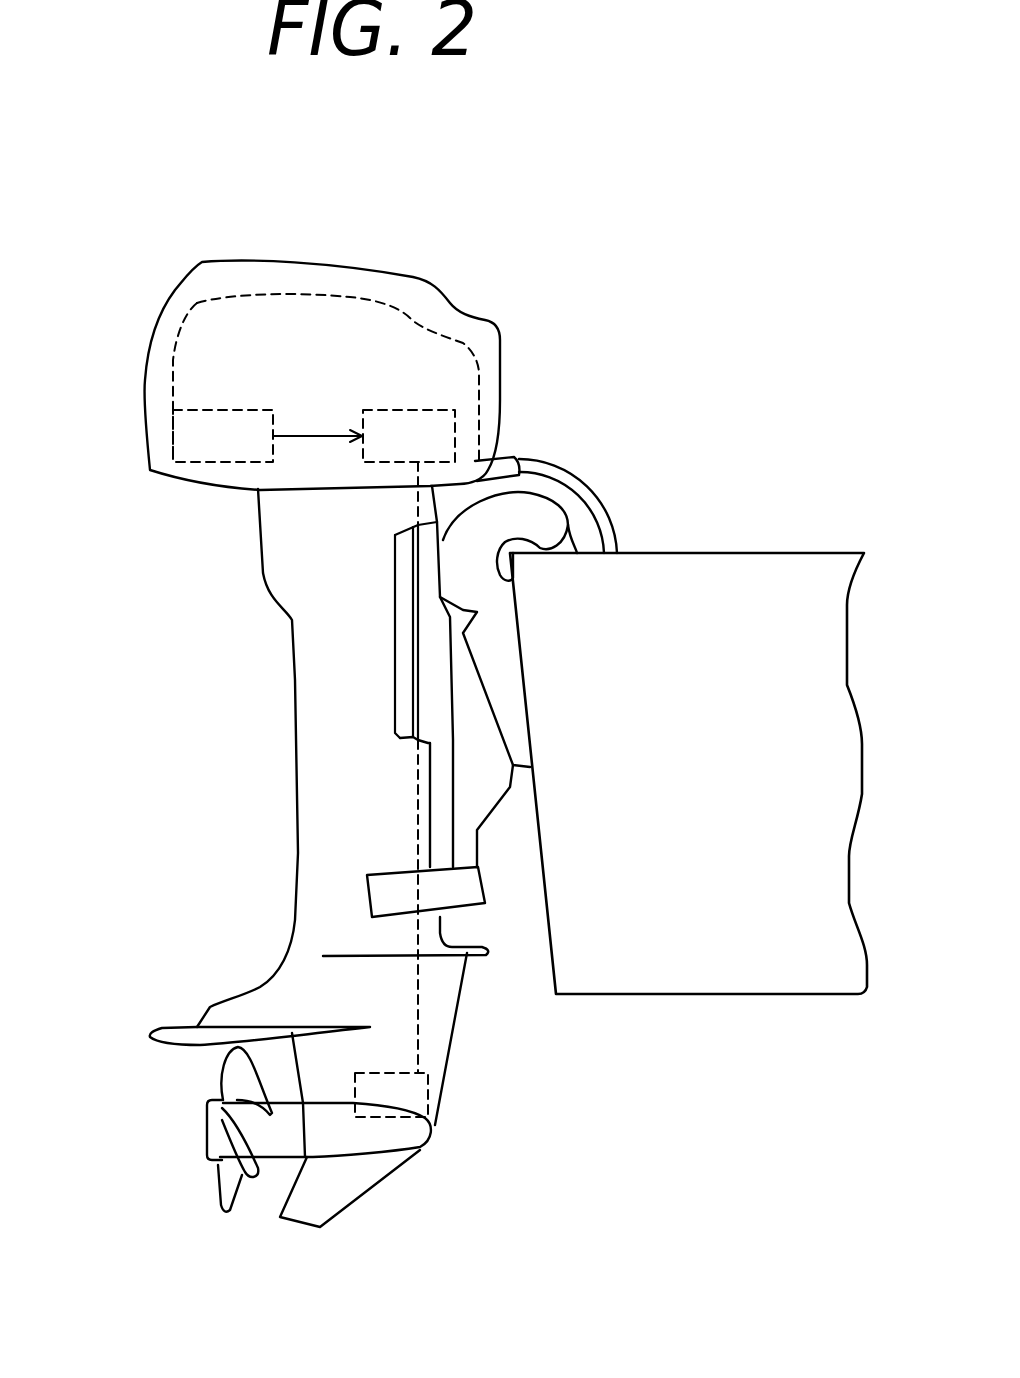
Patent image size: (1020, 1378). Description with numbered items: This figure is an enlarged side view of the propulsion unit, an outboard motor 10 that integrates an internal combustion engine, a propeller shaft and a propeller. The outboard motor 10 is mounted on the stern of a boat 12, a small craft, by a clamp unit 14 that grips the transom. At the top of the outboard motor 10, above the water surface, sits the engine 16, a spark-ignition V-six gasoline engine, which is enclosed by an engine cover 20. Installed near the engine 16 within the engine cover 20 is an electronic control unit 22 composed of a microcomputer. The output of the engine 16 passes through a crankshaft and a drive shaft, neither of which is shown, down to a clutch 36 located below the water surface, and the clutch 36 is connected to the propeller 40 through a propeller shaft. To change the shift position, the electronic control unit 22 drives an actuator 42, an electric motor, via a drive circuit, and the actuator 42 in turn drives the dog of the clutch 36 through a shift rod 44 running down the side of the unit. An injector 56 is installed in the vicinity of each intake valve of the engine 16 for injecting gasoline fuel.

The outboard motor 10 is at (560, 449).
The boat 12 is at (697, 802).
The clamp unit 14 is at (520, 660).
The engine 16 is at (490, 320).
The engine cover 20 is at (393, 277).
The electronic control unit (ECU) 22 is at (223, 407).
The clutch 36 is at (370, 1073).
The propeller 40 is at (217, 1197).
The actuator (electric motor) 42 is at (432, 457).
The shift rod 44 is at (412, 660).
The injector 56 is at (617, 525).